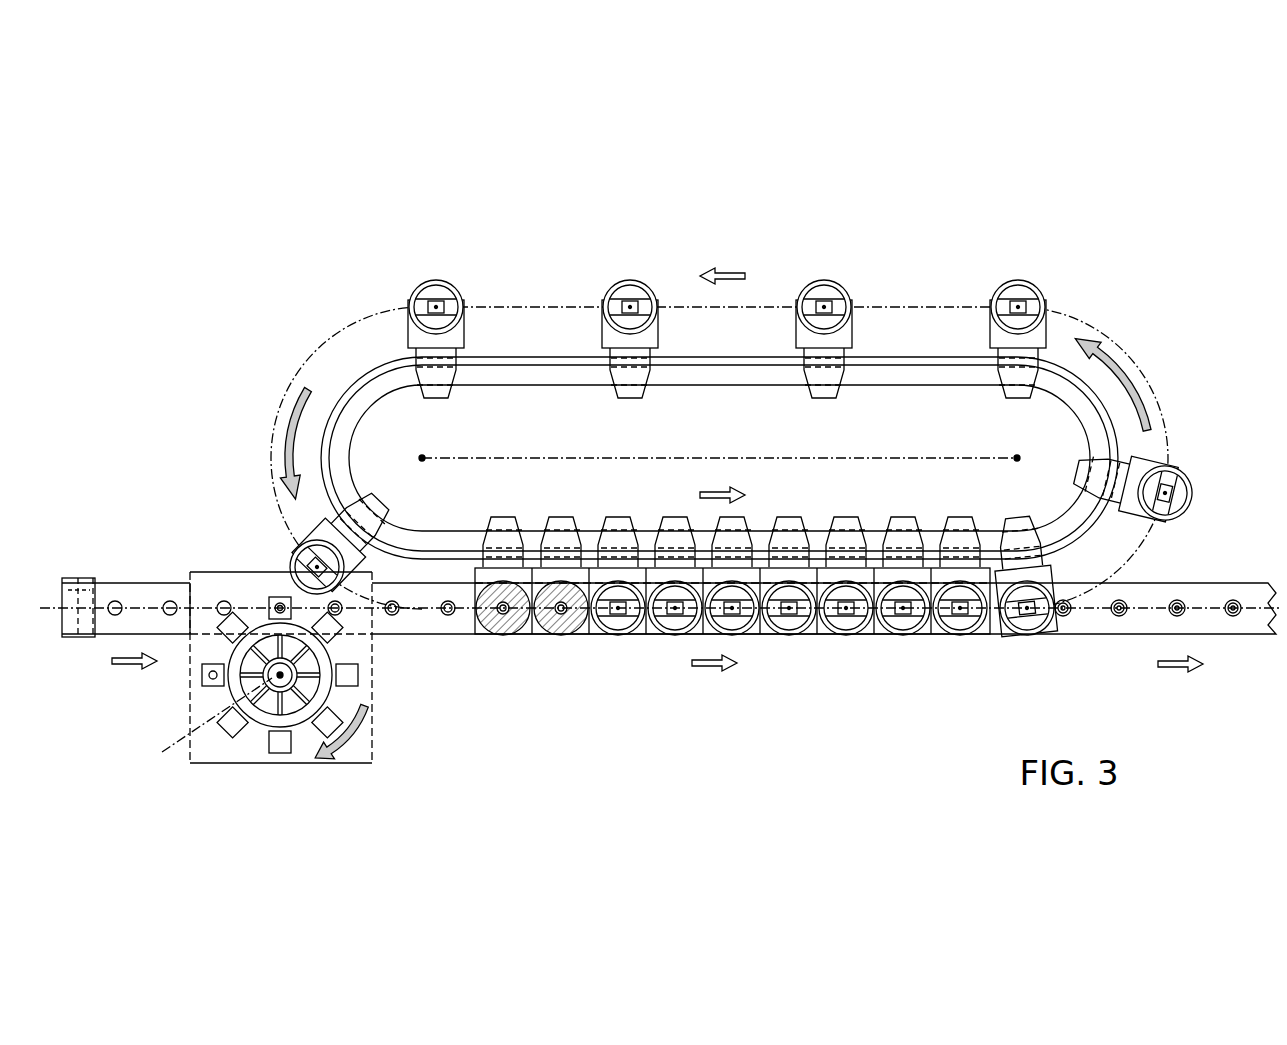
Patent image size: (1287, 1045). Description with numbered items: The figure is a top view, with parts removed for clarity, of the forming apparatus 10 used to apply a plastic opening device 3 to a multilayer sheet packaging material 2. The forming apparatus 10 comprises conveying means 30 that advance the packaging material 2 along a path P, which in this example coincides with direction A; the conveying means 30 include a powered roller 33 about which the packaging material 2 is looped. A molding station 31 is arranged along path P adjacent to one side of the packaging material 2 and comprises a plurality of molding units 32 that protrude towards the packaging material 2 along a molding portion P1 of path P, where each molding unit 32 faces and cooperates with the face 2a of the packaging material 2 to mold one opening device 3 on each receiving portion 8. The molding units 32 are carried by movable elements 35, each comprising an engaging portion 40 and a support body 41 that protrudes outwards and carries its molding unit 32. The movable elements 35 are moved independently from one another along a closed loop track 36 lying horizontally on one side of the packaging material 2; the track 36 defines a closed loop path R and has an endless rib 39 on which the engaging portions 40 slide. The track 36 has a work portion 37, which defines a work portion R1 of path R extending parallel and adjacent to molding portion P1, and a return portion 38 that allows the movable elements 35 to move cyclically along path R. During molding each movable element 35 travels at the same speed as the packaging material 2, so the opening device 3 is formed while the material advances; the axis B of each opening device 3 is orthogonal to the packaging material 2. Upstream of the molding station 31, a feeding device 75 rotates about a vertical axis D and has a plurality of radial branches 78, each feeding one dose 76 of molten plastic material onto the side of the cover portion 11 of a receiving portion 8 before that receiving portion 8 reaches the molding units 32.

The forming apparatus 10 is at (937, 328).
The molding station 31 is at (334, 312).
The closed loop track 36 is at (522, 354).
The return portion 38 is at (905, 358).
The endless rib 39 is at (341, 400).
The support body 41 is at (1043, 325).
The movable element 35 is at (440, 400).
The engaging portion 40 is at (431, 385).
The molding unit 32 is at (440, 274).
The work portion 37 is at (645, 556).
The packaging material 2 is at (1244, 627).
The face of packaging material 2a is at (141, 590).
The conveying means 30 is at (74, 594).
The powered roller 33 is at (76, 618).
The cover portion 11 is at (112, 626).
The receiving portion 8 is at (116, 594).
The dose of molten plastic material 76 is at (392, 618).
The feeding device 75 is at (247, 738).
The radial branch 78 is at (230, 630).
The opening device 3 is at (1128, 597).
The vertical axis D is at (207, 725).
The direction A is at (1253, 606).
The axis of the opening device B is at (678, 622).
The path P is at (1178, 669).
The molding portion P1 is at (708, 672).
The closed loop path R is at (722, 270).
The work portion of path R R1 is at (712, 490).